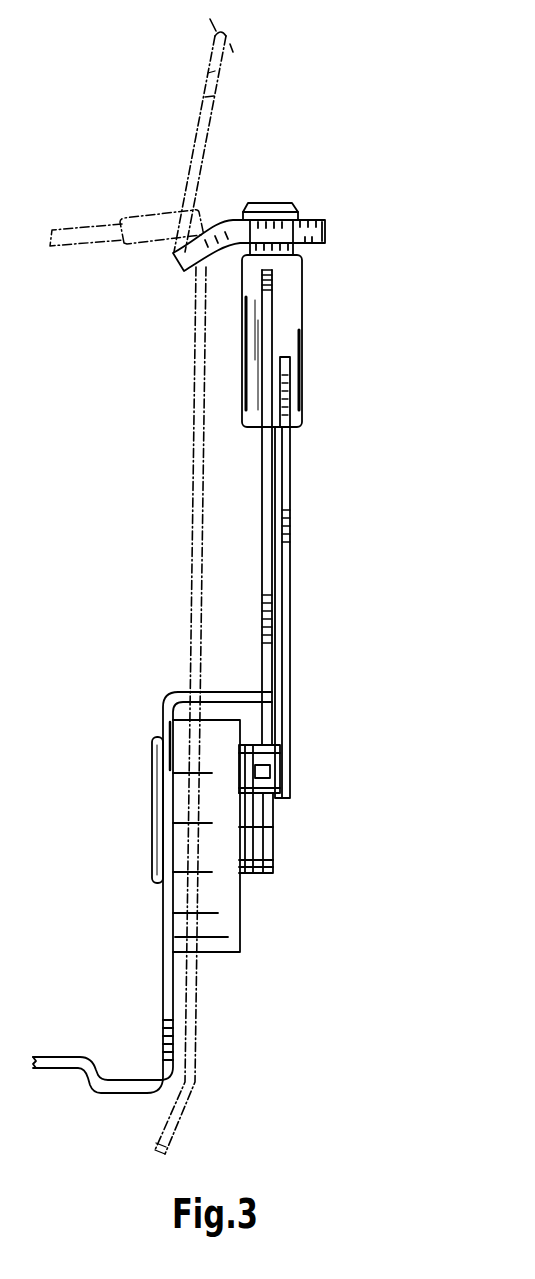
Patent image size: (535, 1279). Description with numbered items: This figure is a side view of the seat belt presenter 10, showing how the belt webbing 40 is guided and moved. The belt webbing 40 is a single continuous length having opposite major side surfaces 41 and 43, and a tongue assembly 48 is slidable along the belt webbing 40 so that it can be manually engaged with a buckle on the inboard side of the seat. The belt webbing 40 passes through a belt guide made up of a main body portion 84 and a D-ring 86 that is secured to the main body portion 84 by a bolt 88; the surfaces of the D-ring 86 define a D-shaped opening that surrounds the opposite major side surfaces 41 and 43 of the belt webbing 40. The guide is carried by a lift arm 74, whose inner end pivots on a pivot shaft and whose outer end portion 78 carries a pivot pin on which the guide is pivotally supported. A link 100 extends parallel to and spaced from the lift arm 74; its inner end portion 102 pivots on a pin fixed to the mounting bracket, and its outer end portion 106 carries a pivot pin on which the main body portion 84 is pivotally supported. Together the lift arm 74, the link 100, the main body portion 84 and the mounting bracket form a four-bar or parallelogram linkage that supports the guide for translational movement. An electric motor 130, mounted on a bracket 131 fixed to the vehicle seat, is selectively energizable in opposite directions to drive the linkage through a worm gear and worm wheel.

The seat belt presenter 10 is at (95, 93).
The belt webbing 40 is at (232, 39).
The major side surface 41 is at (213, 97).
The major side surface 43 is at (212, 72).
The tongue assembly 48 is at (133, 244).
The D-ring 86 is at (313, 232).
The bolt 88 is at (276, 204).
The main body portion 84 is at (287, 328).
The outer end portion 78 is at (268, 377).
The lift arm 74 is at (271, 524).
The outer end portion 106 is at (290, 449).
The link 100 is at (288, 613).
The inner end portion 102 is at (290, 732).
The bracket 131 is at (177, 703).
The electric motor 130 is at (200, 932).